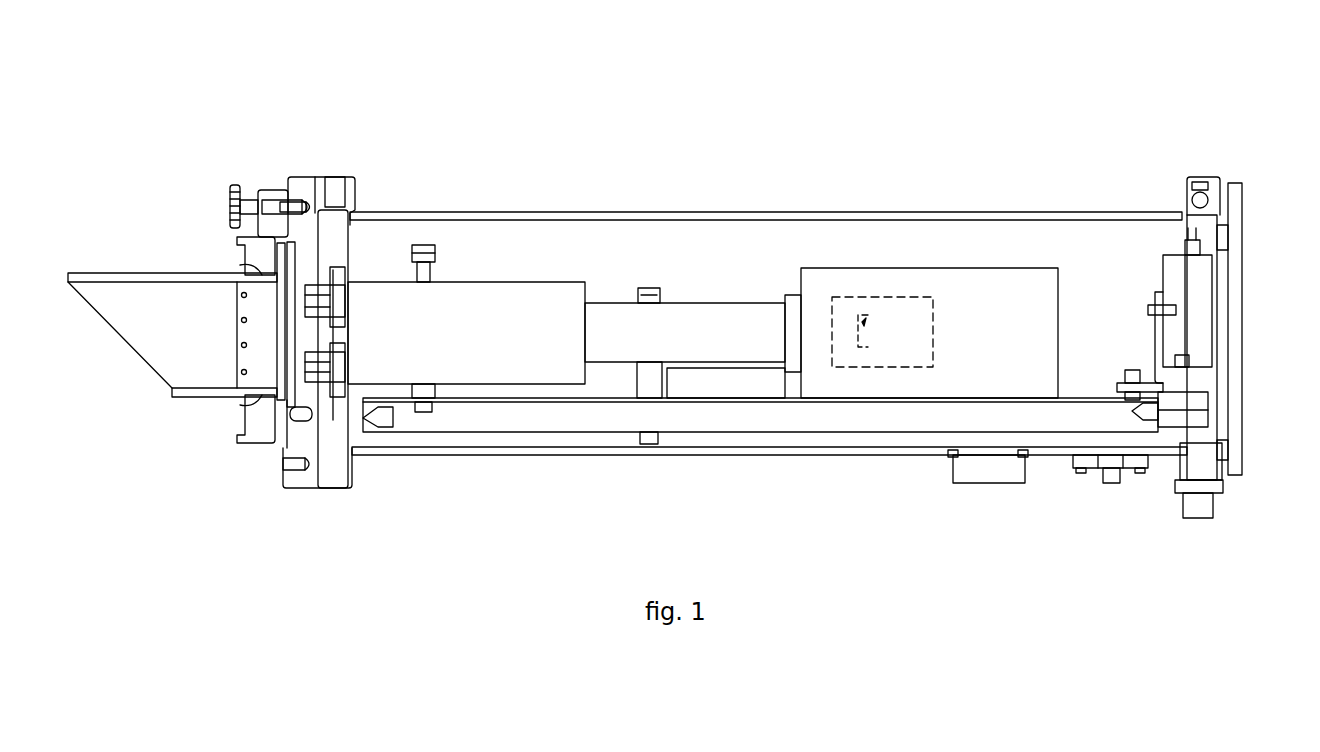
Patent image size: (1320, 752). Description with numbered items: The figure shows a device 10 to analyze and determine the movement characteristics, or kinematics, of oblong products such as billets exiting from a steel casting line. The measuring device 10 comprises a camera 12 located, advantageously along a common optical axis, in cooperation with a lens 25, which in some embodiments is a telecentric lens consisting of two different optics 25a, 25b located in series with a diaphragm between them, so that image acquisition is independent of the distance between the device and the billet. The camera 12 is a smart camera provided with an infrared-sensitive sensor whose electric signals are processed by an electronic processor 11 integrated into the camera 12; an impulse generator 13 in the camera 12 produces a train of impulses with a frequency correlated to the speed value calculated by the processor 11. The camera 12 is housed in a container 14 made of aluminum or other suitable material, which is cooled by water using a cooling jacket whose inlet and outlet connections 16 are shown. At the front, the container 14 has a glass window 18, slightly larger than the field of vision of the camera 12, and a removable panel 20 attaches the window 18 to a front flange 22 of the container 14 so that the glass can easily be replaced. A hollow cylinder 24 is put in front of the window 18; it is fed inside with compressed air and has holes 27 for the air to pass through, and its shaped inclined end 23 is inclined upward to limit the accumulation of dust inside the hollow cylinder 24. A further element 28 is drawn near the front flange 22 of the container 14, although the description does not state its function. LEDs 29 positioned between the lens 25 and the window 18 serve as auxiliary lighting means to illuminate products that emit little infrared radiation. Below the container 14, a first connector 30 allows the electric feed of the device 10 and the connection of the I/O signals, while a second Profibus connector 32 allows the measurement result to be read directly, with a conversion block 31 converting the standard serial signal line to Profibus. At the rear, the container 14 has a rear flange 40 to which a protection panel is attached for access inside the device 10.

The device 10 is at (752, 124).
The electronic processor 11 is at (843, 297).
The camera 12 is at (1035, 325).
The impulse generator 13 is at (862, 322).
The container 14 is at (948, 217).
The cooling jacket connections 16 is at (1200, 520).
The glass window 18 is at (300, 278).
The panel 20 is at (290, 413).
The front flange 22 is at (292, 187).
The inclined end 23 is at (104, 319).
The hollow cylinder 24 is at (125, 275).
The lens 25 is at (608, 270).
The first optic 25a is at (505, 305).
The second optic 25b is at (716, 315).
The holes 27 is at (245, 272).
The knob 28 is at (228, 193).
The LEDs 29 is at (335, 297).
The first connector 30 is at (1000, 465).
The conversion block 31 is at (1200, 322).
The second Profibus connector 32 is at (1112, 483).
The rear flange 40 is at (1215, 187).